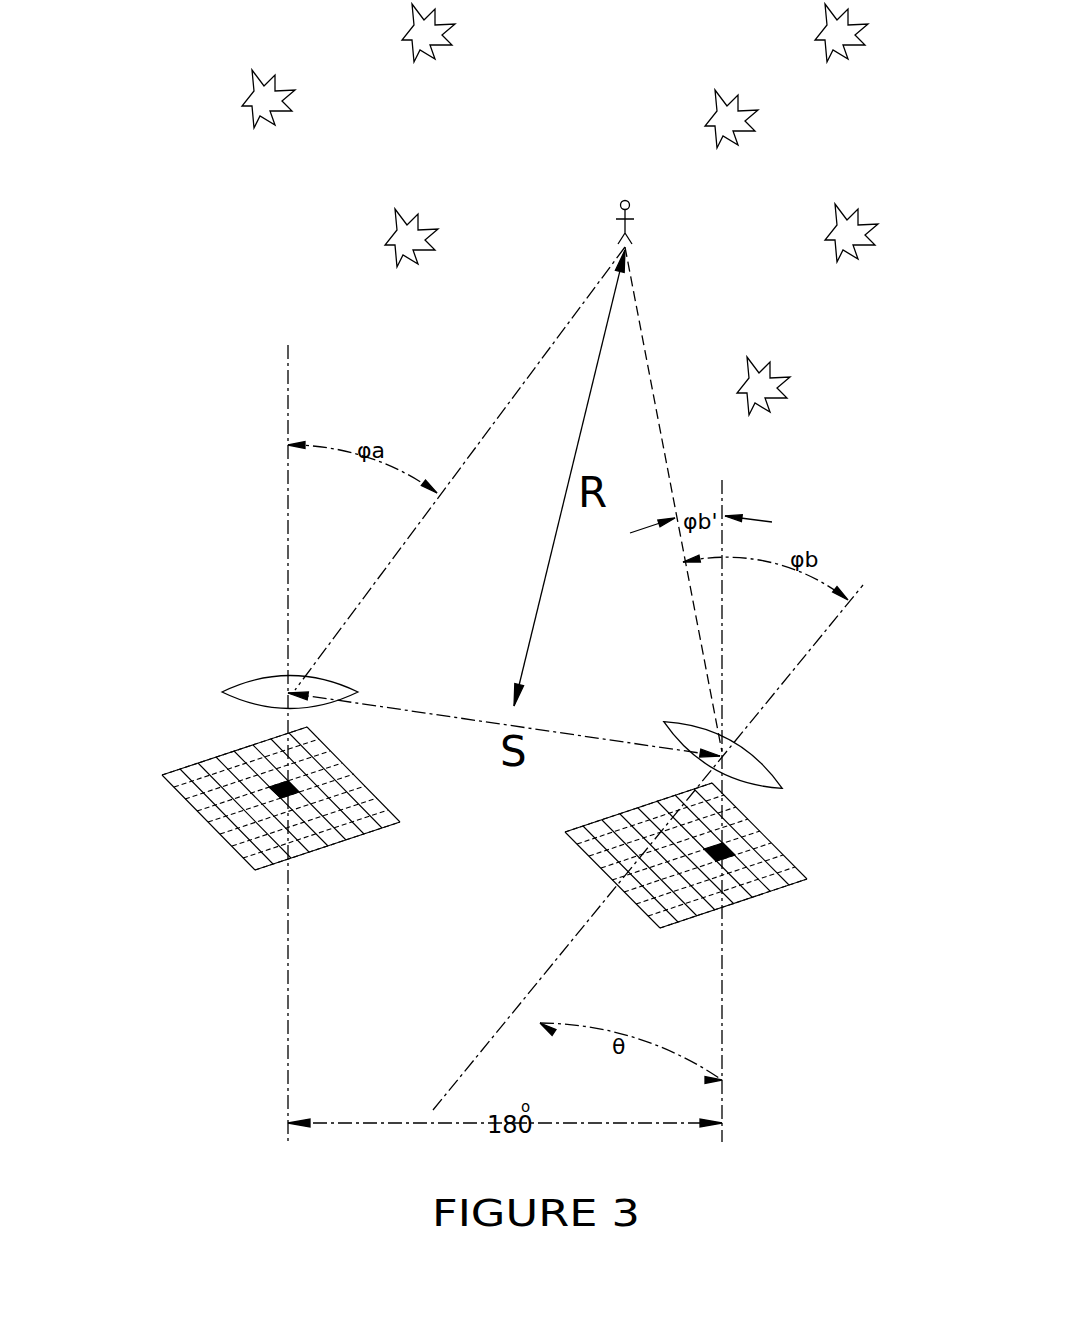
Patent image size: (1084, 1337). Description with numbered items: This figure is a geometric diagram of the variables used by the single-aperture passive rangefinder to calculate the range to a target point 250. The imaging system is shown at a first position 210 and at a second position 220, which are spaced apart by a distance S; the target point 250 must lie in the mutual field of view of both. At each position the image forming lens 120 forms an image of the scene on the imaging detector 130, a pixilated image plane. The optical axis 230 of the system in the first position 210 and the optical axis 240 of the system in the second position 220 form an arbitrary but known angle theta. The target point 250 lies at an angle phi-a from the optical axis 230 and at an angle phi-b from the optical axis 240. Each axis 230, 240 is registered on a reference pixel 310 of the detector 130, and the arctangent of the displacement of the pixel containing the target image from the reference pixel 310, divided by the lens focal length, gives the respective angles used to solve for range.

The image forming lens 120 is at (353, 681).
The imaging detector 130 is at (373, 783).
The reference pixel 310 is at (275, 790).
The first position 210 is at (117, 675).
The second position 220 is at (852, 712).
The optical axis 230 is at (291, 935).
The optical axis 240 is at (533, 1003).
The target point 250 is at (642, 213).